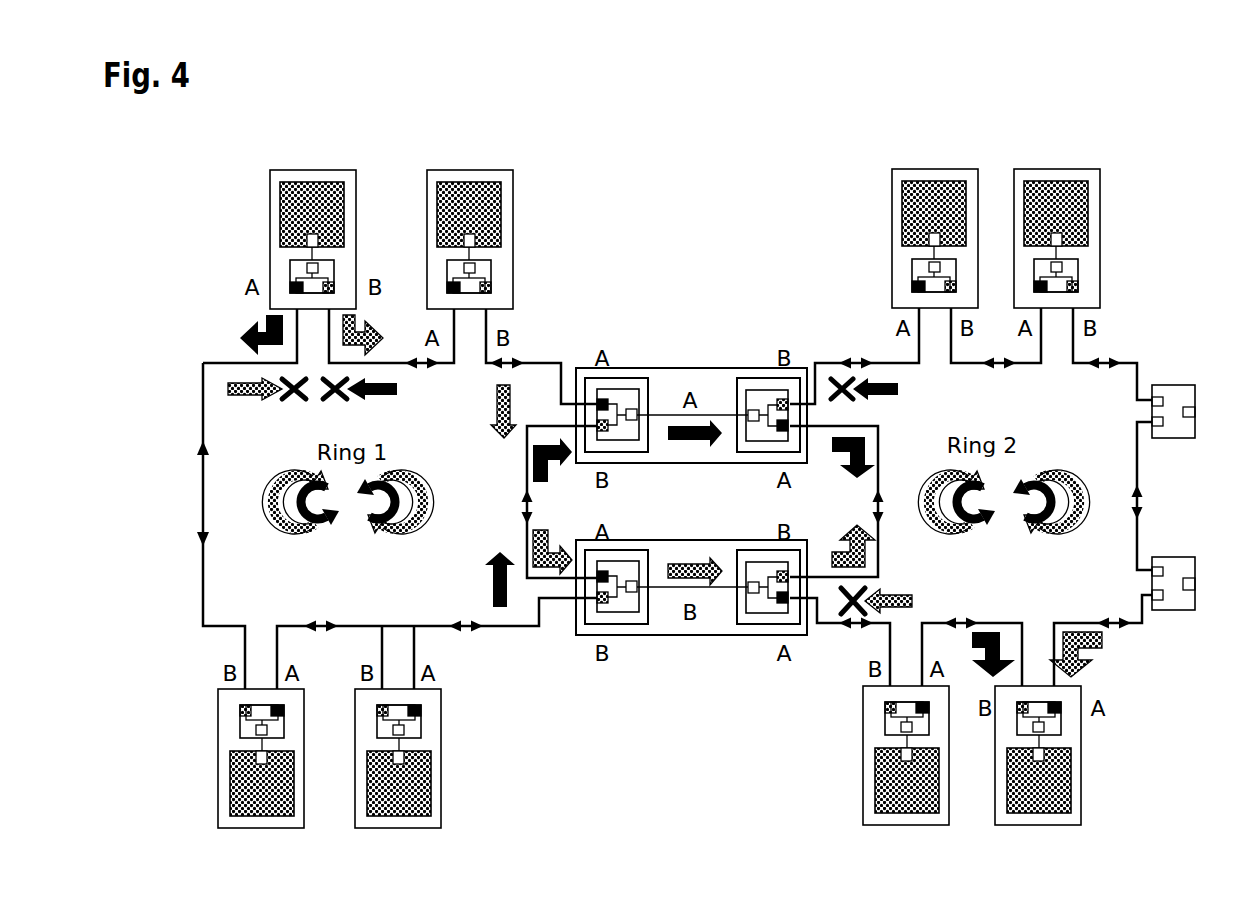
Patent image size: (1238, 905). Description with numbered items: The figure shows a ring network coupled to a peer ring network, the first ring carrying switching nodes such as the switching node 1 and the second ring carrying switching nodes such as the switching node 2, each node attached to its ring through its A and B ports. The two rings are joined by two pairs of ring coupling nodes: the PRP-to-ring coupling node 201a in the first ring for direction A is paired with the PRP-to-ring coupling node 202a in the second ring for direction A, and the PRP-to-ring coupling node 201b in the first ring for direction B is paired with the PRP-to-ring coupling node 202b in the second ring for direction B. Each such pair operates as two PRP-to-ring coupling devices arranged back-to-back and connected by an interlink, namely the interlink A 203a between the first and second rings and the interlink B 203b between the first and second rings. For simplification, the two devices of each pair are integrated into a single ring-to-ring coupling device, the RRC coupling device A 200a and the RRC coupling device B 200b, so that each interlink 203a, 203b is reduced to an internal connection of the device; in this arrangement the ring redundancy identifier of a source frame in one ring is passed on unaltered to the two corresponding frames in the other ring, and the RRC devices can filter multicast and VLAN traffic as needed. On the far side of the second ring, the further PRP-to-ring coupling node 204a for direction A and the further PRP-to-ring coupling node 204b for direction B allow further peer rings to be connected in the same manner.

The switching node 1 is at (280, 210).
The switching node 2 is at (1093, 775).
The RRC coupling device A 200a is at (660, 368).
The RRC coupling device B 200b is at (670, 635).
The PRP-to-ring coupling node in ring 1 in direction A 201a is at (620, 378).
The PRP-to-ring coupling node in ring 1 in direction B 201b is at (622, 635).
The PRP-to-ring coupling node in ring 2 in direction A 202a is at (767, 378).
The PRP-to-ring coupling node in ring 2 in direction B 202b is at (768, 635).
The interlink A between ring 1 and ring 2 203a is at (718, 414).
The interlink B between ring 1 and ring 2 203b is at (708, 588).
The further PRP-to-ring coupling node in ring 2 in direction A 204a is at (1148, 410).
The further PRP-to-ring coupling node in ring 2 in direction B 204b is at (1148, 578).